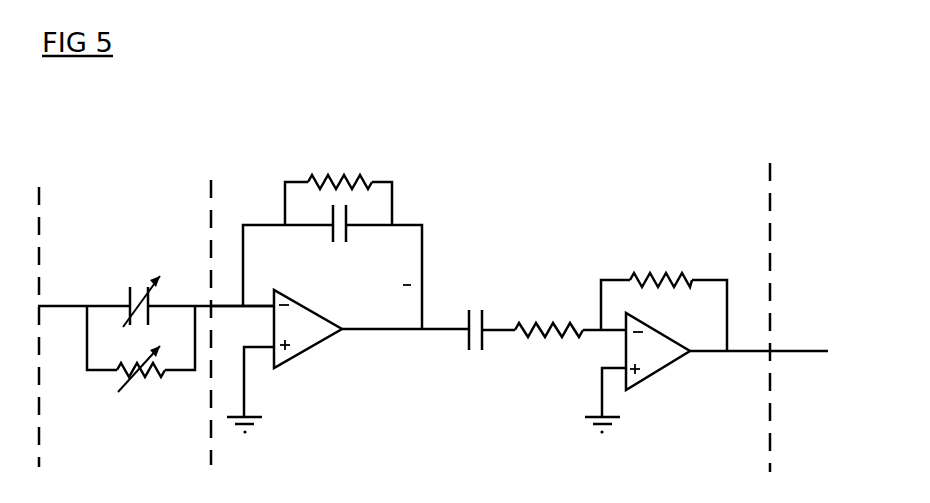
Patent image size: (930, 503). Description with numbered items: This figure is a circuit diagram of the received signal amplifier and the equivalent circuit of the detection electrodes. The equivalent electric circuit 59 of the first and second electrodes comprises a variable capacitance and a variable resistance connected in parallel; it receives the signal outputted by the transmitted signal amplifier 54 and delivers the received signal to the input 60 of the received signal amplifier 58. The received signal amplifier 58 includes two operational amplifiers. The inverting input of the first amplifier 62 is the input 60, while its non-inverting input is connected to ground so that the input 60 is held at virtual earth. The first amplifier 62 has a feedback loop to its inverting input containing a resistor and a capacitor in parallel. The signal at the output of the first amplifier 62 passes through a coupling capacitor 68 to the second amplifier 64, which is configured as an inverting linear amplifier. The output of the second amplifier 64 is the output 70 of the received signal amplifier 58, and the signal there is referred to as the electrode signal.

The transmitted signal amplifier 54 is at (53, 211).
The received signal amplifier 58 is at (692, 205).
The equivalent electric circuit 59 is at (112, 277).
The input 60 is at (229, 306).
The first amplifier 62 is at (312, 342).
The second amplifier 64 is at (662, 363).
The coupling capacitor 68 is at (467, 343).
The output 70 is at (791, 350).